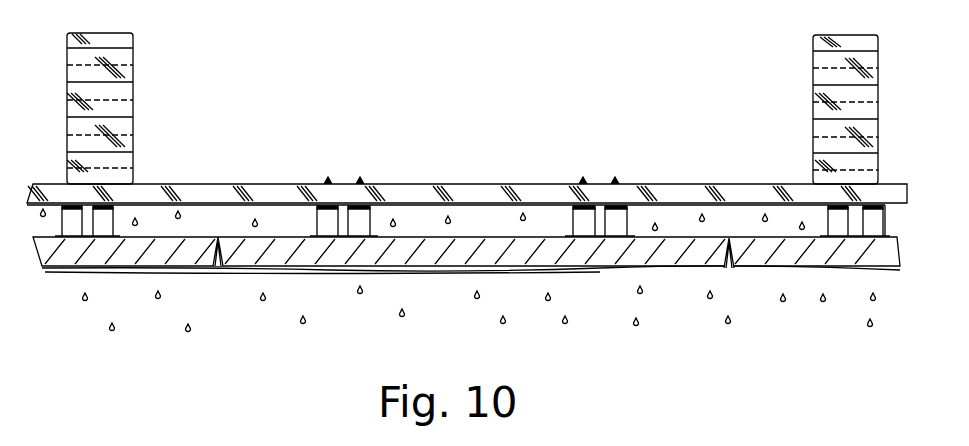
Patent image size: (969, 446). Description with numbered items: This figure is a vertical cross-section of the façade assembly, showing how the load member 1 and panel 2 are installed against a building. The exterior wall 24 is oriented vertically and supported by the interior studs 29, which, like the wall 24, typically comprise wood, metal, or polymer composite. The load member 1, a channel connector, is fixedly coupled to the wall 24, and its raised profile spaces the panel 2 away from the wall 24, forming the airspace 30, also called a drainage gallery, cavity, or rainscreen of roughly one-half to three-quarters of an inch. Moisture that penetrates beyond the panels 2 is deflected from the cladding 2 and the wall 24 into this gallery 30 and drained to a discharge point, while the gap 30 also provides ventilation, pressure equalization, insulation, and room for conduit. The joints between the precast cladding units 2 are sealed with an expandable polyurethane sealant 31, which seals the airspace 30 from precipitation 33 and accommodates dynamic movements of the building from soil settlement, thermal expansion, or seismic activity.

The load member 1 is at (573, 208).
The panel 2 is at (788, 248).
The wall 24 is at (263, 183).
The stud 29 is at (133, 127).
The airspace 30 is at (735, 223).
The sealant 31 is at (220, 272).
The precipitation 33 is at (733, 321).